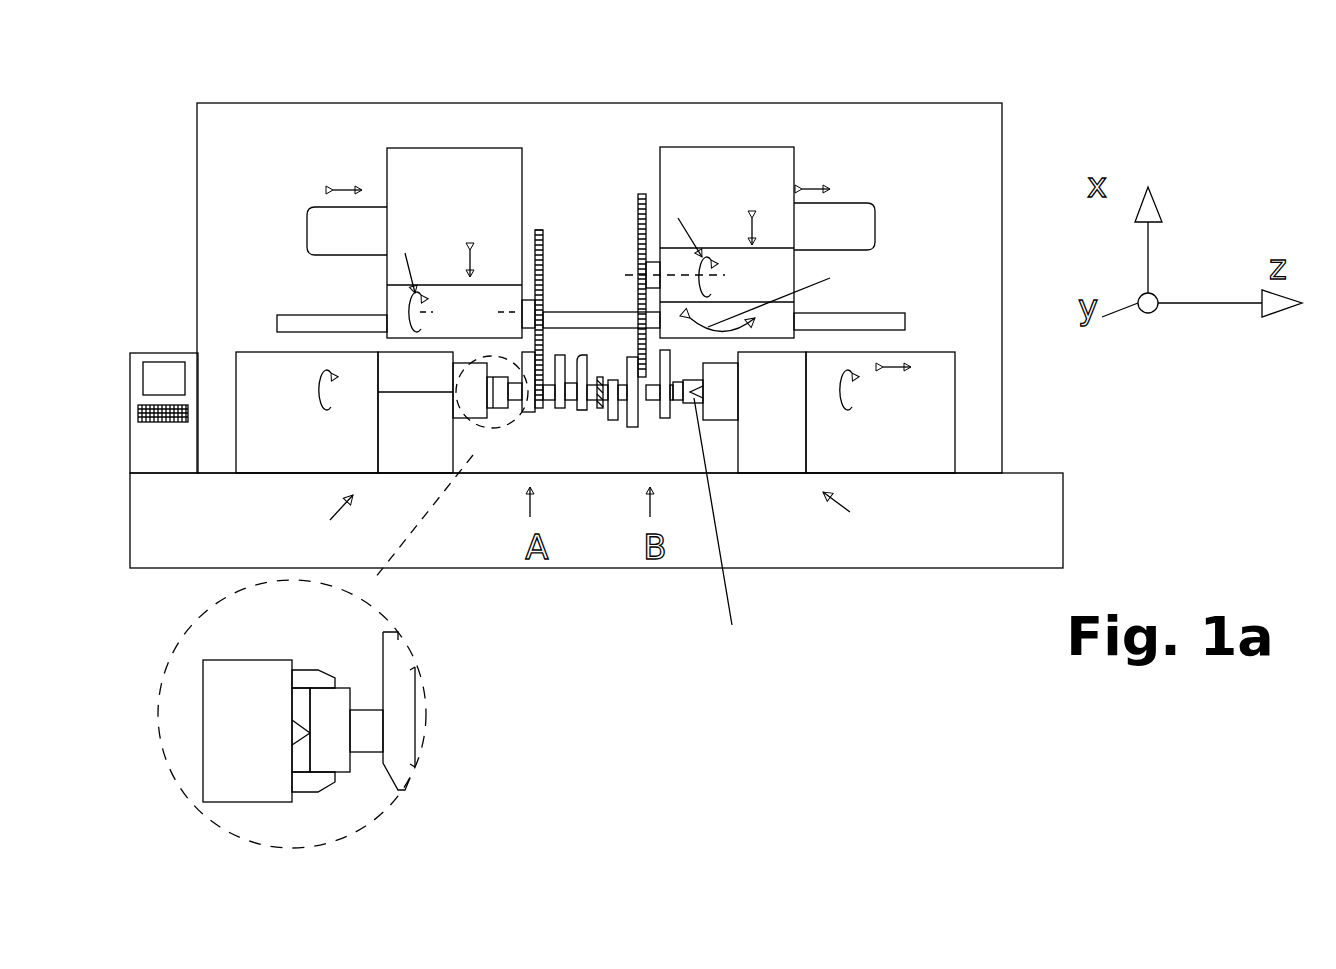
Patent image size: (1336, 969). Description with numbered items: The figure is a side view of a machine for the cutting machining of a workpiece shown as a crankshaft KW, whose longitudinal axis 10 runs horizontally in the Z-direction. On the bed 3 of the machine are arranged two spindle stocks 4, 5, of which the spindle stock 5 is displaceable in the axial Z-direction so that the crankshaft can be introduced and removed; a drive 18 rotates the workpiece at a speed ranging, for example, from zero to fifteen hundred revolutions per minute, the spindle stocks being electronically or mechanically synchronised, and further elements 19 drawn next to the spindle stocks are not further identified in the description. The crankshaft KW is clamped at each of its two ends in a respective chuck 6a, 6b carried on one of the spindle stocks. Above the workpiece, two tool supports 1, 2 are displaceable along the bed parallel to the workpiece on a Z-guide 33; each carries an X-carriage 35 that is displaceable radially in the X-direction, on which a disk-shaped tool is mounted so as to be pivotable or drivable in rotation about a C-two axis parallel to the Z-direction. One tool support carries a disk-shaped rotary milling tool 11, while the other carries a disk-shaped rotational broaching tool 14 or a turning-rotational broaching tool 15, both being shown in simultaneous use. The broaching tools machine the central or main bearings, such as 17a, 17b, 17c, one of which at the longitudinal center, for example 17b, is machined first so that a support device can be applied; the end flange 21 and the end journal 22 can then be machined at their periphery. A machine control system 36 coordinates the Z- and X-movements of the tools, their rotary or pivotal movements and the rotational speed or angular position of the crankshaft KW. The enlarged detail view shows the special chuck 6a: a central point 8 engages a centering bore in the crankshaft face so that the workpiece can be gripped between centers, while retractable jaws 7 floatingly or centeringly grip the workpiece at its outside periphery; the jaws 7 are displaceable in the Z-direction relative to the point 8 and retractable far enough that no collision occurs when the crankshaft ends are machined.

The tool support 1 is at (414, 243).
The tool support 2 is at (750, 242).
The bed 3 is at (596, 520).
The spindle stock 4 is at (307, 412).
The spindle stock 5 is at (880, 412).
The chuck 6a is at (355, 582).
The chuck 6b is at (797, 392).
The retractable jaws 7 is at (313, 677).
The central point 8 is at (302, 730).
The longitudinal axis 10 is at (370, 392).
The rotary milling tool 11 is at (538, 227).
The rotational broaching tool 14 is at (630, 238).
The turning-rotational broaching tool 15 is at (642, 285).
The main bearing journal 17a is at (515, 390).
The central bearing 17b is at (594, 385).
The main bearing journal 17c is at (676, 400).
The drive 18 is at (597, 530).
The spindle housing 19 is at (592, 412).
The end flange 21 is at (500, 397).
The end journal 22 is at (725, 531).
The Z-guide 33 is at (277, 320).
The X-carriage 35 is at (611, 299).
The machine control system 36 is at (140, 418).
The crankshaft KW is at (575, 402).